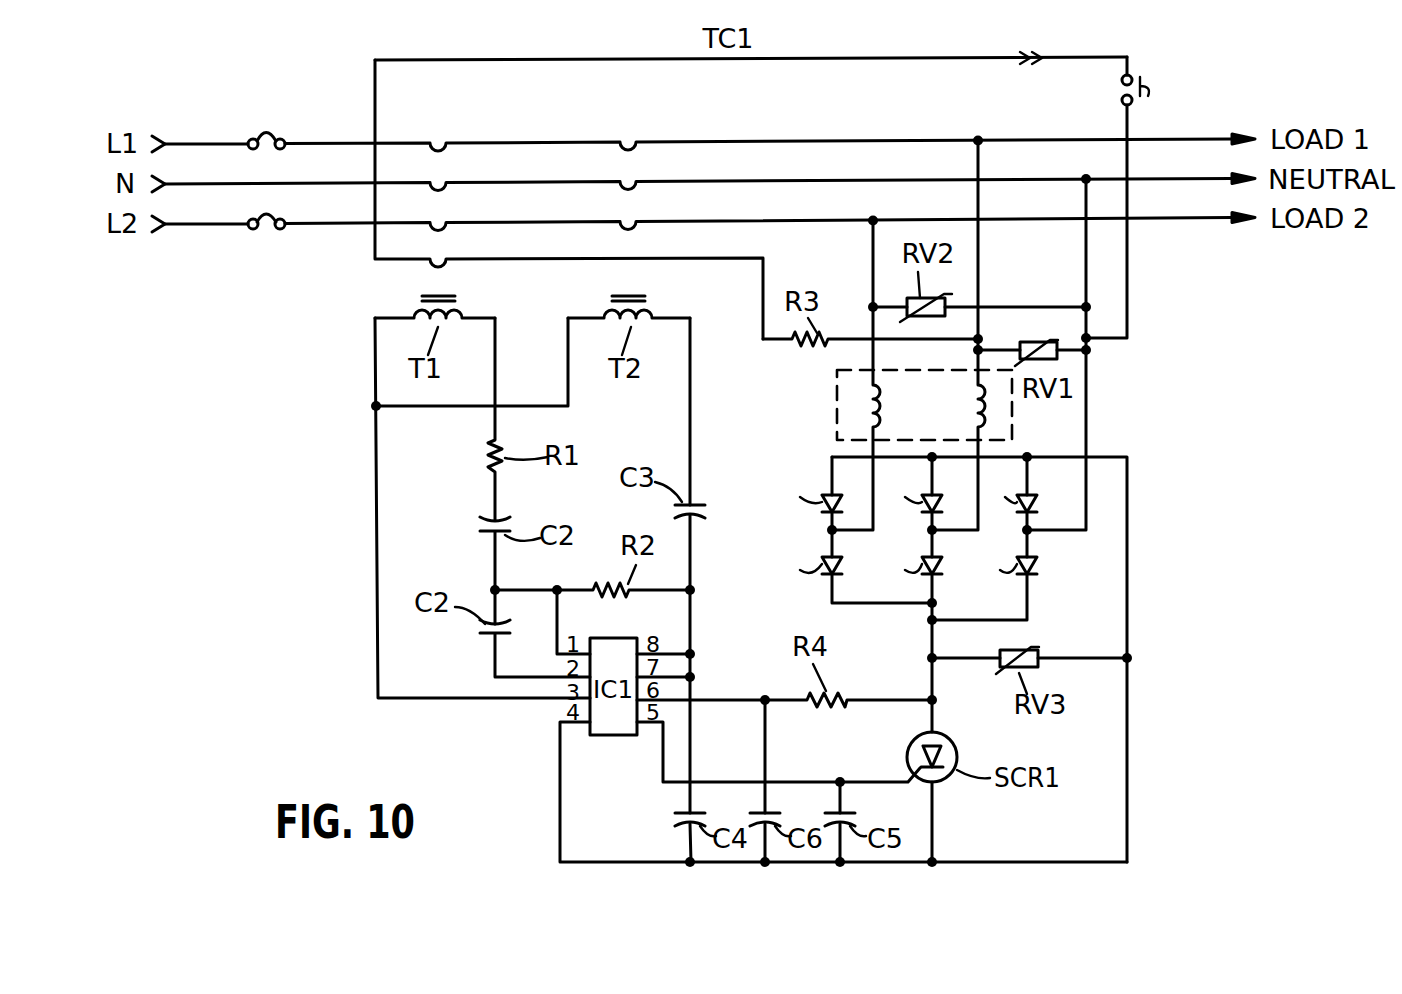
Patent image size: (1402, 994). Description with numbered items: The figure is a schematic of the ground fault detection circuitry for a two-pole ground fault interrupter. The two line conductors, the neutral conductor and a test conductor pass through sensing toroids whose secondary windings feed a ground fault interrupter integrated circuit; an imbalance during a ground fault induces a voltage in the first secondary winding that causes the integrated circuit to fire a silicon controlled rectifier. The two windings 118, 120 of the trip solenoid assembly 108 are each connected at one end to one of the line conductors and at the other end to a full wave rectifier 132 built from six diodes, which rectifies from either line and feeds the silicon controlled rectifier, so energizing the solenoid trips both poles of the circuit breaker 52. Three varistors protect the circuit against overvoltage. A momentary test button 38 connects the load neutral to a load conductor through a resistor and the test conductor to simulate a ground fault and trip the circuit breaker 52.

The circuit breaker 52 is at (263, 131).
The test button 38 is at (1170, 78).
The trip solenoid assembly 108 is at (891, 336).
The winding 120 is at (860, 397).
The winding 118 is at (985, 405).
The full wave rectifier 132 is at (802, 597).